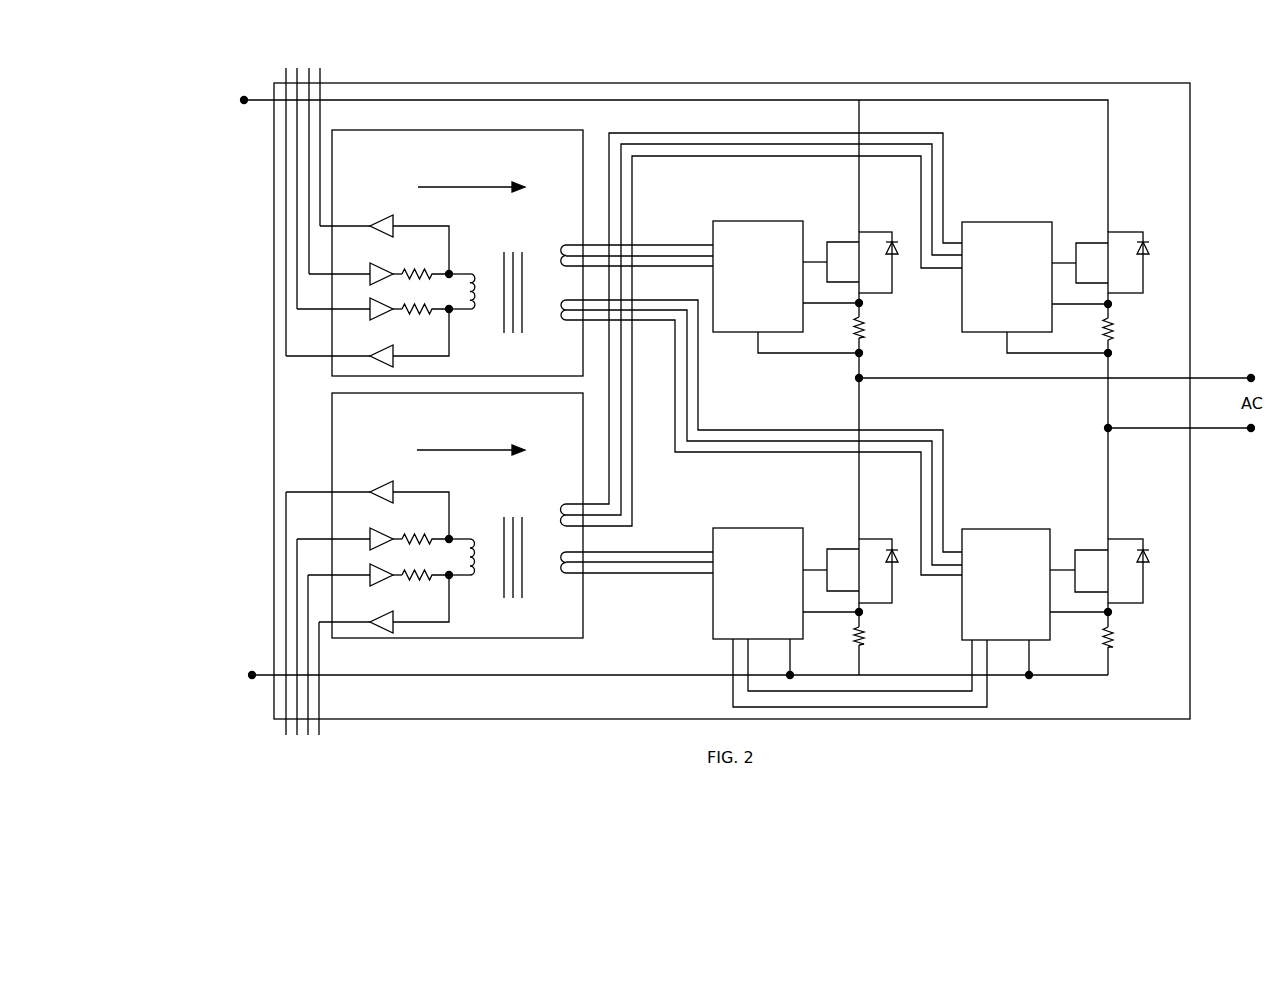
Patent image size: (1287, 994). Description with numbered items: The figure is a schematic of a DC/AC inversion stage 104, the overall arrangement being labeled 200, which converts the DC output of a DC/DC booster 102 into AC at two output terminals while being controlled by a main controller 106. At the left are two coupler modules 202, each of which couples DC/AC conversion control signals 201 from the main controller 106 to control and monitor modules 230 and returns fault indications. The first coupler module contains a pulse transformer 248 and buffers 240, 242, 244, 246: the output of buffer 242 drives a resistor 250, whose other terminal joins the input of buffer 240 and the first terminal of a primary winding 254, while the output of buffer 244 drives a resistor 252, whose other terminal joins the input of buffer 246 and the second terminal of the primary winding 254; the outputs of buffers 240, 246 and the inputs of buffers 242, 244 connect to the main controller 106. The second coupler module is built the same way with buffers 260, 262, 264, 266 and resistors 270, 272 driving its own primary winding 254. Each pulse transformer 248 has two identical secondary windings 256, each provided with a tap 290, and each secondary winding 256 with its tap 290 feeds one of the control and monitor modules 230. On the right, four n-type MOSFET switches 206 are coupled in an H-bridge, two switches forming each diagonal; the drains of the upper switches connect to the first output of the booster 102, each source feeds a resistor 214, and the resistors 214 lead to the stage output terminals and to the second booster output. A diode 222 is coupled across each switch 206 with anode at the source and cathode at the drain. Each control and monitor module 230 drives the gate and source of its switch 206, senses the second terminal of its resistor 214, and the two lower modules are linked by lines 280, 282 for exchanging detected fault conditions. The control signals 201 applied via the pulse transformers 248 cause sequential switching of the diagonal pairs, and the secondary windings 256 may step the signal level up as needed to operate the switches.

The DC-AC inverter system 200 is at (1263, 148).
The DC/DC booster 102 is at (644, 388).
The DC/AC inversion stage 104 is at (1086, 83).
The main controller 106 is at (316, 399).
The DC/AC conversion control signal 201 is at (442, 188).
The coupler module 202 is at (490, 130).
The n-type MOSFET switch 206 is at (843, 242).
The resistor 214 is at (866, 328).
The diode 222 is at (895, 268).
The control and monitor module 230 is at (727, 221).
The buffer 240 is at (374, 220).
The buffer 242 is at (384, 266).
The buffer 244 is at (384, 303).
The buffer 246 is at (380, 347).
The pulse transformer 248 is at (527, 346).
The resistor 250 is at (404, 268).
The resistor 252 is at (404, 304).
The primary winding 254 is at (478, 270).
The secondary winding 256 is at (557, 248).
The buffer 260 is at (373, 486).
The buffer 262 is at (384, 531).
The buffer 264 is at (382, 569).
The buffer 266 is at (379, 614).
The resistor 270 is at (403, 533).
The resistor 272 is at (403, 569).
The line 280 is at (908, 692).
The line 282 is at (954, 708).
The tap 290 is at (576, 251).